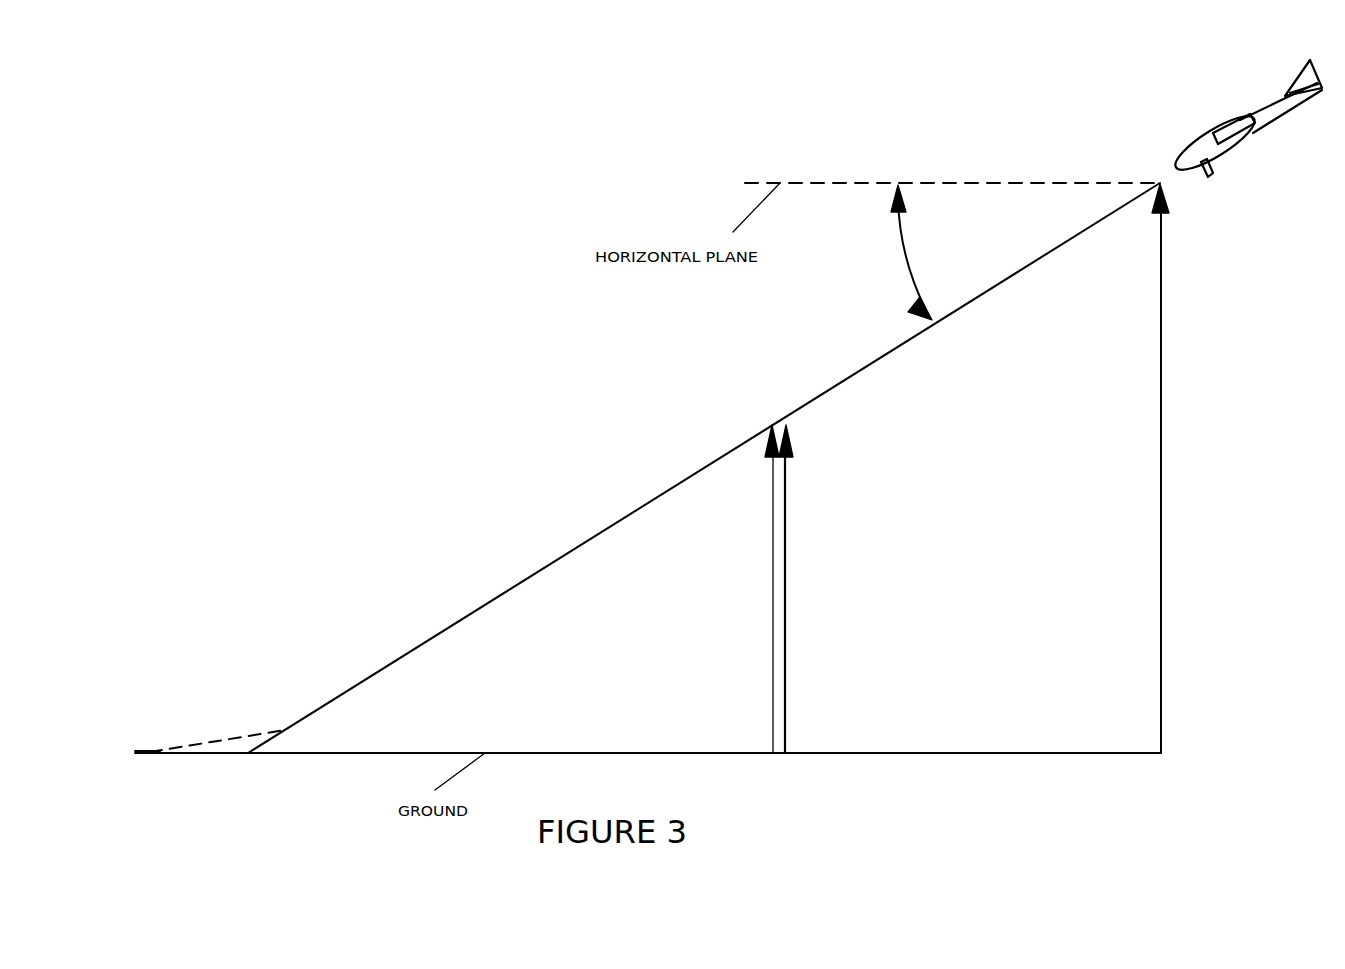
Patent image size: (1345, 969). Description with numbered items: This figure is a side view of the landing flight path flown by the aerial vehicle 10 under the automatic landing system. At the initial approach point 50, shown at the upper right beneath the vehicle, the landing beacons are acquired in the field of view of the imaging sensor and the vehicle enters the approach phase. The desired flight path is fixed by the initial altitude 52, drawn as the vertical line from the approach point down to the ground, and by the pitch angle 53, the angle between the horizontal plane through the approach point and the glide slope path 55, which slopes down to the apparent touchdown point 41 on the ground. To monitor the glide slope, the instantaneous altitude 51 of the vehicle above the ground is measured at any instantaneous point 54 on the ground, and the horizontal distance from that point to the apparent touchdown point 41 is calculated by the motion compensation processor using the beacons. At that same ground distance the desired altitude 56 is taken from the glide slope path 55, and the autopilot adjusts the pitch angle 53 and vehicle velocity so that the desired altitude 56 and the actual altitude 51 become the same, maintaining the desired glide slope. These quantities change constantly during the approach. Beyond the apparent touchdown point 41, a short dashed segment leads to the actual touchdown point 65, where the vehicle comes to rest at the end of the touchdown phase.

The aerial vehicle 10 is at (1213, 132).
The apparent touchdown point 41 is at (247, 753).
The initial approach point 50 is at (1163, 187).
The instantaneous altitude 51 is at (785, 590).
The initial altitude 52 is at (1161, 408).
The pitch angle 53 is at (902, 232).
The instantaneous point on the ground 54 is at (786, 752).
The glide slope path 55 is at (832, 387).
The desired altitude 56 is at (772, 552).
The touchdown point 65 is at (135, 753).